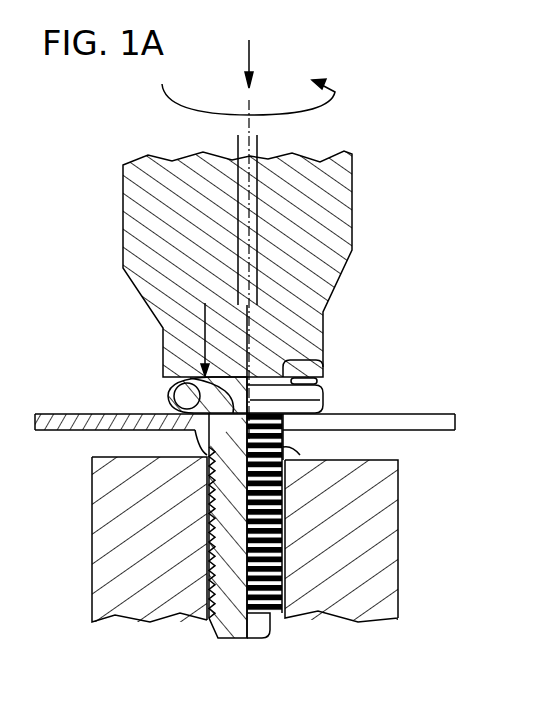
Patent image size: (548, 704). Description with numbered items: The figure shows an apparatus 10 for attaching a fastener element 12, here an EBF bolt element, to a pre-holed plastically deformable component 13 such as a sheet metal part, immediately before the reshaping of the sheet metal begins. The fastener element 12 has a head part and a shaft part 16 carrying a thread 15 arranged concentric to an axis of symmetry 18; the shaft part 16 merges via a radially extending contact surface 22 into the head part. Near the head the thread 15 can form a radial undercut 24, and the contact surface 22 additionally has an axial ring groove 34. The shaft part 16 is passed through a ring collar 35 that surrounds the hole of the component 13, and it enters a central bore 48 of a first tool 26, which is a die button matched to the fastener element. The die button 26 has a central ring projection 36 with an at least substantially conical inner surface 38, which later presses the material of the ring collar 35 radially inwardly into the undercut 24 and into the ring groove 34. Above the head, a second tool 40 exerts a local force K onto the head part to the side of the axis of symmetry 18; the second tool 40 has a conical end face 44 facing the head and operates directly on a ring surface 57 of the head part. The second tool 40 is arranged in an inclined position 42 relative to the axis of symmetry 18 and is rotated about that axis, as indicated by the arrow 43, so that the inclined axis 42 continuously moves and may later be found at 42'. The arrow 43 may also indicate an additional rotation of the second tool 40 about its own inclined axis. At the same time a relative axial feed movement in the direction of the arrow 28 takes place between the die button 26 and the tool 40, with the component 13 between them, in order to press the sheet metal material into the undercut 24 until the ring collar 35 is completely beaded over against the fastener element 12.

The apparatus 10 is at (424, 268).
The fastener element 12 is at (334, 389).
The component 13 is at (432, 427).
The thread 15 is at (205, 575).
The shaft part 16 is at (220, 638).
The axis of symmetry 18 is at (242, 115).
The contact surface 22 is at (198, 410).
The undercut 24 is at (168, 371).
The first tool 26 is at (378, 560).
The arrow 28 is at (252, 47).
The axial ring groove 34 is at (172, 390).
The ring collar 35 is at (193, 452).
The central ring projection 36 is at (300, 455).
The conical inner surface 38 is at (207, 456).
The second tool 40 is at (343, 187).
The inclined position 42 is at (204, 210).
The inclined axis at later point in time 42' is at (295, 210).
The arrow 43 is at (335, 92).
The conical end face 44 is at (292, 365).
The central bore 48 is at (292, 502).
The ring surface 57 is at (314, 380).
The local force K is at (202, 330).